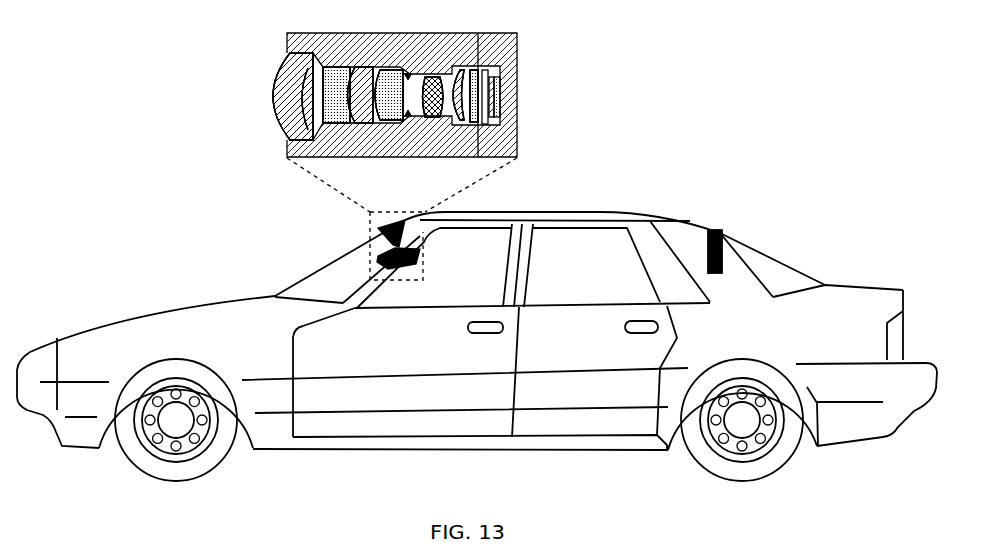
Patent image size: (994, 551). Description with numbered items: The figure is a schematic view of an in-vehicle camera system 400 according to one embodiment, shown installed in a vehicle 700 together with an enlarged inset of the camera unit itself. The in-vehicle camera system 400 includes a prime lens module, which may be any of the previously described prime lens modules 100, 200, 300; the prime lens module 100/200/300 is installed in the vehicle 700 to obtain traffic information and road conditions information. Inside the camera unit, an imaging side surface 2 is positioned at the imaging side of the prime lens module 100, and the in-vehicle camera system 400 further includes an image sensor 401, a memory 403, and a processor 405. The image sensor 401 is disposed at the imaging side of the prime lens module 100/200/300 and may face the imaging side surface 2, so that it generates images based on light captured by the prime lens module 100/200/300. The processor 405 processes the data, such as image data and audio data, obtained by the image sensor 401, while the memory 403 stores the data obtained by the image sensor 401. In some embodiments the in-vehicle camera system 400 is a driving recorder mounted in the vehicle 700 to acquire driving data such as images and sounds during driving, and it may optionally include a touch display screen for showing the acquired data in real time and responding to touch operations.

The imaging side surface 2 is at (480, 67).
The prime lens module 100 is at (274, 70).
The prime lens module 200 is at (325, 87).
The prime lens module 300 is at (325, 87).
The in-vehicle camera system 400 is at (303, 231).
The image sensor 401 is at (489, 115).
The memory 403 is at (495, 97).
The processor 405 is at (500, 87).
The vehicle 700 is at (187, 323).